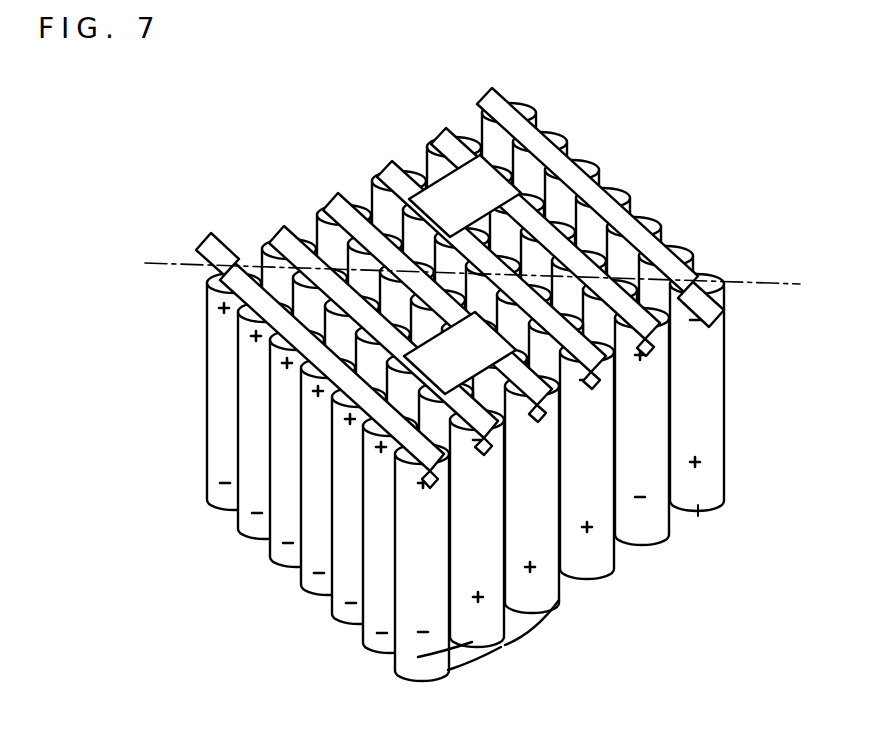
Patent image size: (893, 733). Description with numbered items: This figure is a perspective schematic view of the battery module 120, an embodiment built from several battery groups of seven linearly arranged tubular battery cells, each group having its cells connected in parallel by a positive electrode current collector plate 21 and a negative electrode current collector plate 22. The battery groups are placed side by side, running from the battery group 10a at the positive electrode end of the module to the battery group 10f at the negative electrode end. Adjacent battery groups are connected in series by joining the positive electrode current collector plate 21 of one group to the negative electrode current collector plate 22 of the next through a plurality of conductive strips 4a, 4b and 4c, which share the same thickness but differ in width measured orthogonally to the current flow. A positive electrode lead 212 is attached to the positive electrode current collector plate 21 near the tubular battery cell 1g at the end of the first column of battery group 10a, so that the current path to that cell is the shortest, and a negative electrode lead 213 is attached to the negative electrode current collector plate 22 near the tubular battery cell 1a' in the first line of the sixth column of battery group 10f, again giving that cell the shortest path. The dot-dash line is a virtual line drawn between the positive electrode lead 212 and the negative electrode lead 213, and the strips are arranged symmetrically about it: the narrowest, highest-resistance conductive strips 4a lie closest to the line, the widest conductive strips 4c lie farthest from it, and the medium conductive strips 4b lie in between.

The battery module 120 is at (237, 108).
The tubular battery cell 1g is at (215, 325).
The tubular battery cell 1a' is at (734, 392).
The conductive strip 4a is at (340, 253).
The conductive strip 4b is at (482, 195).
The conductive strip 4c is at (472, 662).
The positive electrode current collector plate 21 is at (304, 333).
The positive electrode lead 212 is at (212, 248).
The negative electrode current collector plate 22 is at (598, 190).
The negative electrode lead 213 is at (722, 302).
The battery group 10a is at (467, 675).
The battery group 10f is at (696, 513).